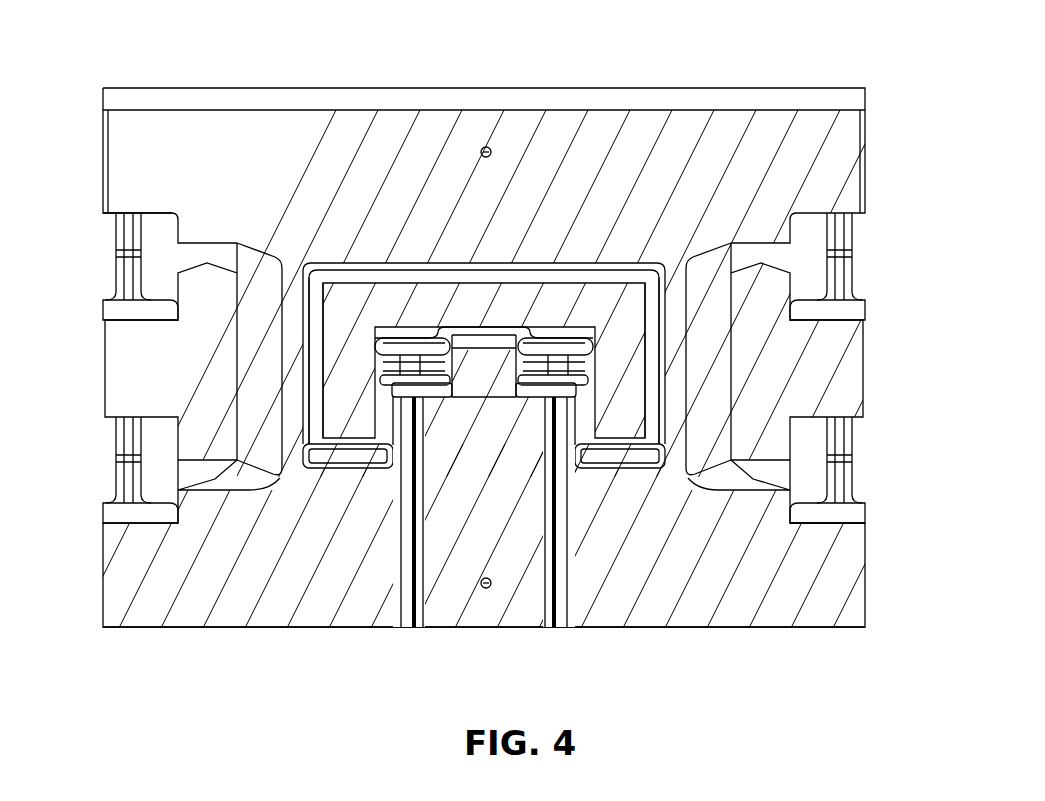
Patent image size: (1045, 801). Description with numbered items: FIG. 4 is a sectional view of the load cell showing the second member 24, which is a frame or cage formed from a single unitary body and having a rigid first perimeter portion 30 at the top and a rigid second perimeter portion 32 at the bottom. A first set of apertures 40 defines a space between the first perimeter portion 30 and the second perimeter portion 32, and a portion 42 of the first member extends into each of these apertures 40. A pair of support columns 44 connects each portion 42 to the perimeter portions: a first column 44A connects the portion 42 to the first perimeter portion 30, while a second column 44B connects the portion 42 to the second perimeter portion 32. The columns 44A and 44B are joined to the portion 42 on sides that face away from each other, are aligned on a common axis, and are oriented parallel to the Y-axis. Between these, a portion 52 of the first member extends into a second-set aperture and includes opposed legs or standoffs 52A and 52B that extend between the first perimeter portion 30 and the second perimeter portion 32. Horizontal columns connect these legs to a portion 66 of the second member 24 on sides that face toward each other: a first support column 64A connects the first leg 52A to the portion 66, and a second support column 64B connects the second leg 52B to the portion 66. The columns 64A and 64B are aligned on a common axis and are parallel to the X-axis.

The second member 24 is at (692, 628).
The first perimeter portion 30 is at (867, 130).
The second perimeter portion 32 is at (867, 598).
The first set of apertures 40 is at (173, 212).
The portion of the first member 42 is at (104, 369).
The pair of support columns 44 is at (76, 198).
The first column 44A is at (113, 273).
The second column 44B is at (117, 480).
The portion of the first member 52 is at (558, 327).
The first leg 52A is at (650, 320).
The second leg 52B is at (323, 348).
The first support column 64A is at (553, 352).
The second support column 64B is at (408, 352).
The portion of the second member 66 is at (478, 340).